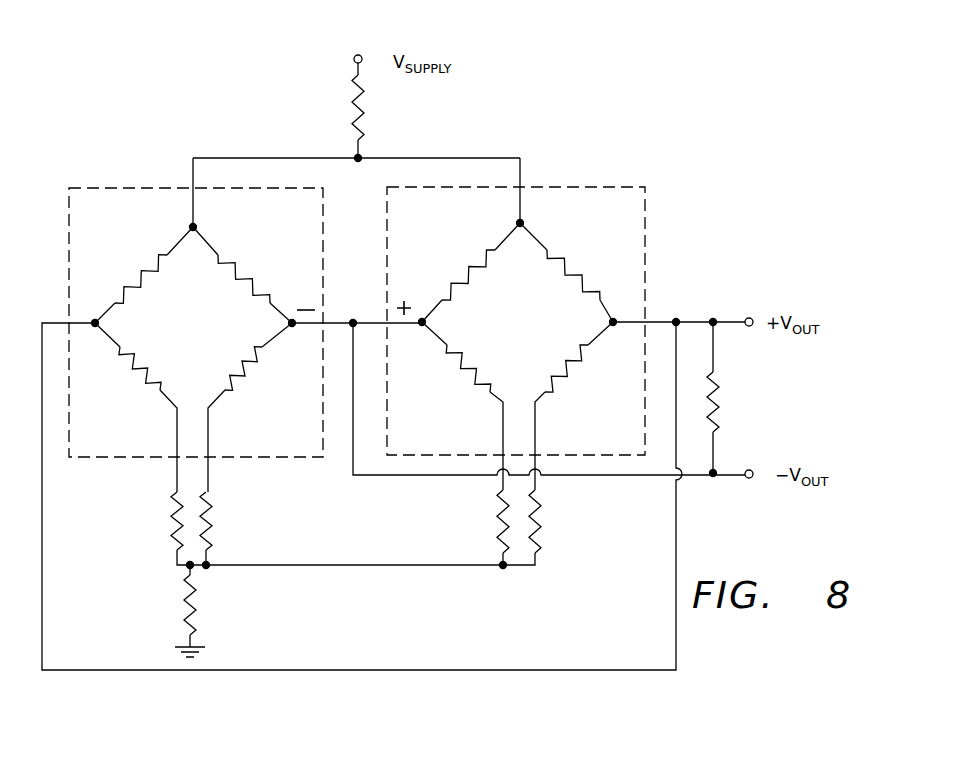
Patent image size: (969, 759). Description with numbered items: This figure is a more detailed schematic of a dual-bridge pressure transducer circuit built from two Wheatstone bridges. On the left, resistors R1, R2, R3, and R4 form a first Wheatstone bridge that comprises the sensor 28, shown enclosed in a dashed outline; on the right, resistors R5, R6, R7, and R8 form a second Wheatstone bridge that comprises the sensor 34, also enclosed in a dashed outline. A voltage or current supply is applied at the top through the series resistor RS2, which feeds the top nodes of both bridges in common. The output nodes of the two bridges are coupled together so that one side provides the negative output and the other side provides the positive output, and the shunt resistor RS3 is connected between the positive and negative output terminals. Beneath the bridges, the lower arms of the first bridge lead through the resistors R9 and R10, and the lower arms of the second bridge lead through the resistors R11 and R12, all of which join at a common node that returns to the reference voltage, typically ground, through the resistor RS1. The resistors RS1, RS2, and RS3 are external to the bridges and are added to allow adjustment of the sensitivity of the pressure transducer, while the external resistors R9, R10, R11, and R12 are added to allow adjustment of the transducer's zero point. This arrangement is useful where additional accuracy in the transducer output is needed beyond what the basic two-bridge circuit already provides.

The sensor 28 is at (196, 318).
The sensor 34 is at (516, 317).
The resistor R1 is at (242, 275).
The resistor R2 is at (143, 275).
The resistor R3 is at (134, 407).
The resistor R4 is at (250, 407).
The resistor R5 is at (566, 272).
The resistor R6 is at (467, 272).
The resistor R7 is at (457, 406).
The resistor R8 is at (574, 406).
The resistor R9 is at (170, 528).
The resistor R10 is at (227, 528).
The resistor R11 is at (481, 527).
The resistor R12 is at (541, 527).
The resistor RS1 is at (213, 606).
The resistor RS2 is at (385, 116).
The resistor RS3 is at (735, 397).